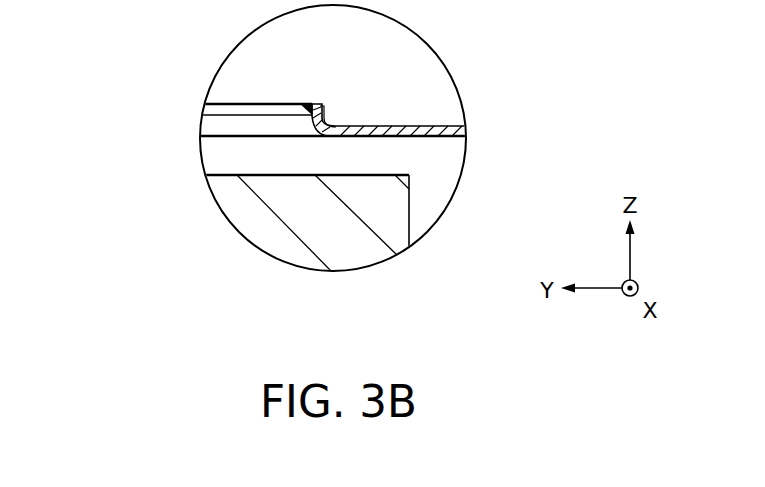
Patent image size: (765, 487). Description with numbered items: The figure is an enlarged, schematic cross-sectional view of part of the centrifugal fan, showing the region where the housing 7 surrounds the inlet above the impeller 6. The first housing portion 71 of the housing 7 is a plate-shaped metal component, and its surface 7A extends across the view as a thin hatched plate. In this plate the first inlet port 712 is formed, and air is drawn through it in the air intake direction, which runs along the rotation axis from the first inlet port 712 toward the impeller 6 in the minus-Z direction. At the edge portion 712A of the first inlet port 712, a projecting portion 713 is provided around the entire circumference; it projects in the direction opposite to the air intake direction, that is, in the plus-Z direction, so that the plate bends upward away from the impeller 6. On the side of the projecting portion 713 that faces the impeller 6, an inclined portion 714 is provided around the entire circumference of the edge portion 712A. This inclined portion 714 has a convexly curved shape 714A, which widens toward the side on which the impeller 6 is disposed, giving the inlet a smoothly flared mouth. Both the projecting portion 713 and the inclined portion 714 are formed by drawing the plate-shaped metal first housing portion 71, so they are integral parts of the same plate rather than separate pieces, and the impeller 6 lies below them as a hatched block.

The impeller 6 is at (304, 223).
The housing 7 is at (387, 102).
The surface of the first housing portion 7A is at (420, 125).
The first housing portion 71 is at (387, 102).
The first inlet port 712 is at (344, 77).
The edge portion 712A is at (323, 107).
The projecting portion 713 is at (303, 105).
The inclined portion 714 is at (256, 109).
The convexly curved shape 714A is at (256, 109).